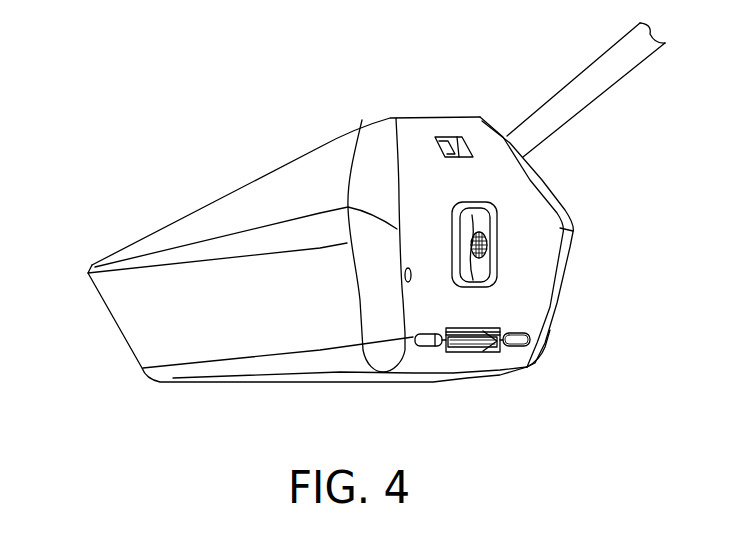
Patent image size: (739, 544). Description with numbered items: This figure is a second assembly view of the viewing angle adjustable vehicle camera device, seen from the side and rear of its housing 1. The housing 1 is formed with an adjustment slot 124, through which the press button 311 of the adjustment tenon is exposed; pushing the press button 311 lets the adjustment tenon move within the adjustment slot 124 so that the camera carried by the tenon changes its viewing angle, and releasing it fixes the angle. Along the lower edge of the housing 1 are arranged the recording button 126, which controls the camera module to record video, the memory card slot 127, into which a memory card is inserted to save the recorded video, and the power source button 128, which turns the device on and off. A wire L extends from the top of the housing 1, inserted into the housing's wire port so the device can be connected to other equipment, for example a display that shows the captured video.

The housing 1 is at (273, 368).
The wire L is at (577, 90).
The adjustment slot 124 is at (492, 212).
The press button 311 is at (487, 245).
The recording button 126 is at (517, 346).
The memory card slot 127 is at (485, 351).
The power source button 128 is at (433, 346).